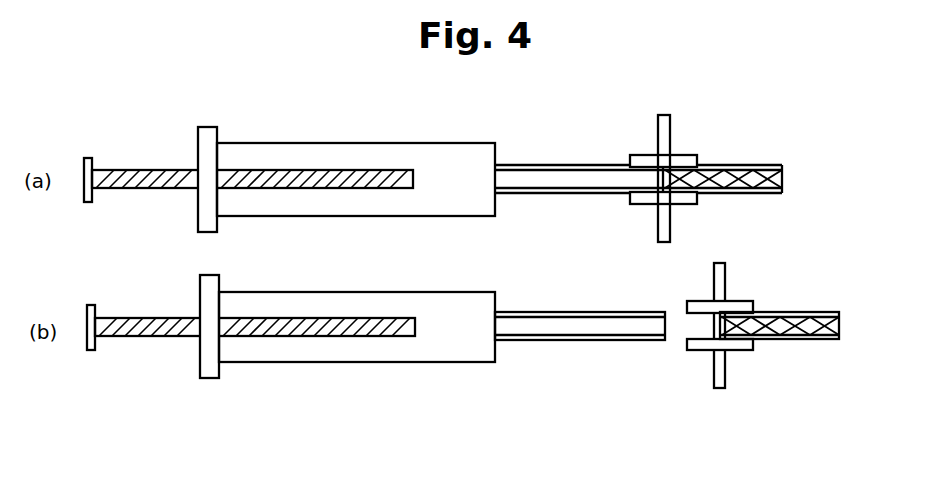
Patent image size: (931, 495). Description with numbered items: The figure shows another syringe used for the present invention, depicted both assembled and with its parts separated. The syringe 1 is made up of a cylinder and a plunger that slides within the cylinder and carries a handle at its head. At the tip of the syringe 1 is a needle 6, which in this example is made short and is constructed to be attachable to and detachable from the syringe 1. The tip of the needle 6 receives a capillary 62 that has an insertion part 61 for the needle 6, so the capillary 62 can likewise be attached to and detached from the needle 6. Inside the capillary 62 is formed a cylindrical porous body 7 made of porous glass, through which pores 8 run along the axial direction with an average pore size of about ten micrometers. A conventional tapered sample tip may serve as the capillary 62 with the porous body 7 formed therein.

The syringe 1 is at (263, 377).
The needle 6 is at (540, 342).
The insertion part 61 is at (687, 342).
The capillary 62 is at (783, 335).
The cylindrical porous body 7 is at (809, 306).
The pores 8 is at (793, 322).